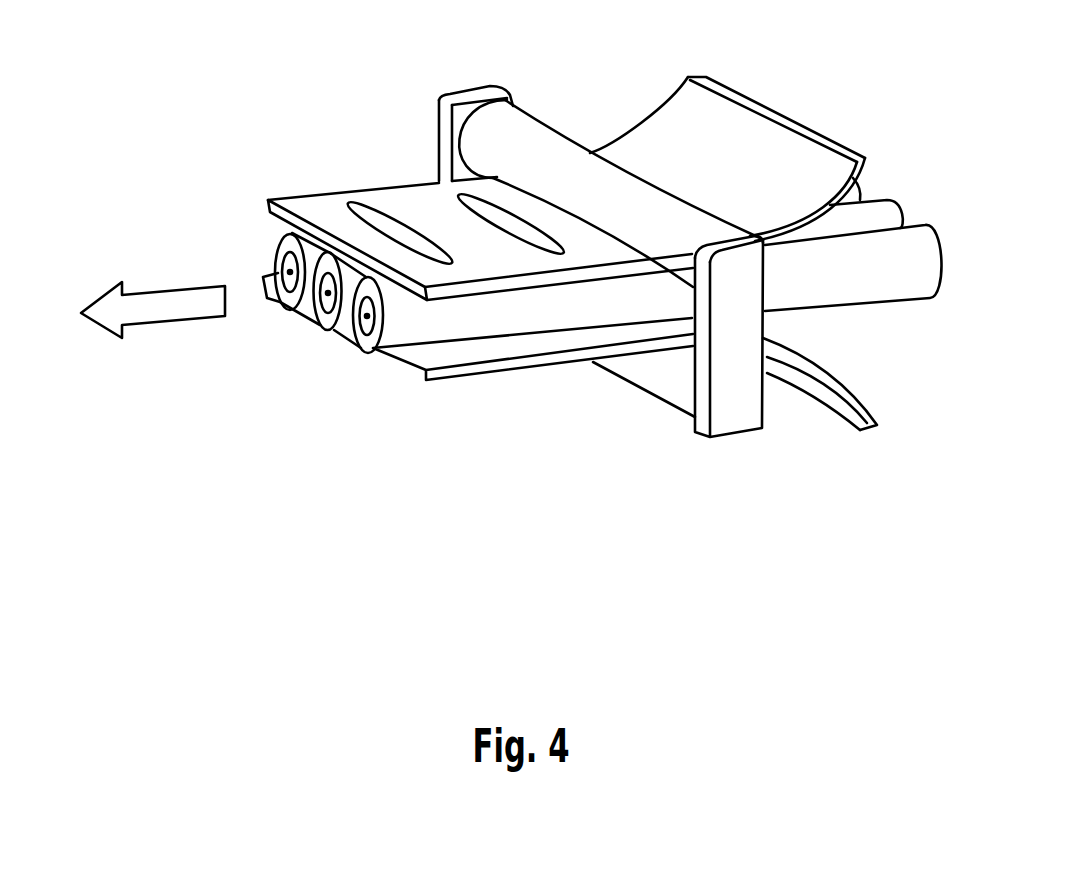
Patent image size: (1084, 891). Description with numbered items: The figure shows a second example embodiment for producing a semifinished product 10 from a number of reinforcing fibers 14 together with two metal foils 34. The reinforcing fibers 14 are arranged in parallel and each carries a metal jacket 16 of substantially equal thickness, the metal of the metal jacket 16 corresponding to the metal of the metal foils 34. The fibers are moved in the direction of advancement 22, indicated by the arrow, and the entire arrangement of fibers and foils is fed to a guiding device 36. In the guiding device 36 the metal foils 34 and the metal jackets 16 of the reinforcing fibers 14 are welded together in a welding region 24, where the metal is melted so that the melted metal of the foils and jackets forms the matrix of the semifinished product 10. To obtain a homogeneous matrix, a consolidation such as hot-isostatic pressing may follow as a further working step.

The semifinished product 10 is at (325, 177).
The reinforcing fibers 14 is at (277, 263).
The metal jacket 16 is at (280, 238).
The direction of advancement 22 is at (107, 338).
The welding region 24 is at (473, 203).
The metal foils 34 is at (780, 140).
The guiding device 36 is at (732, 403).